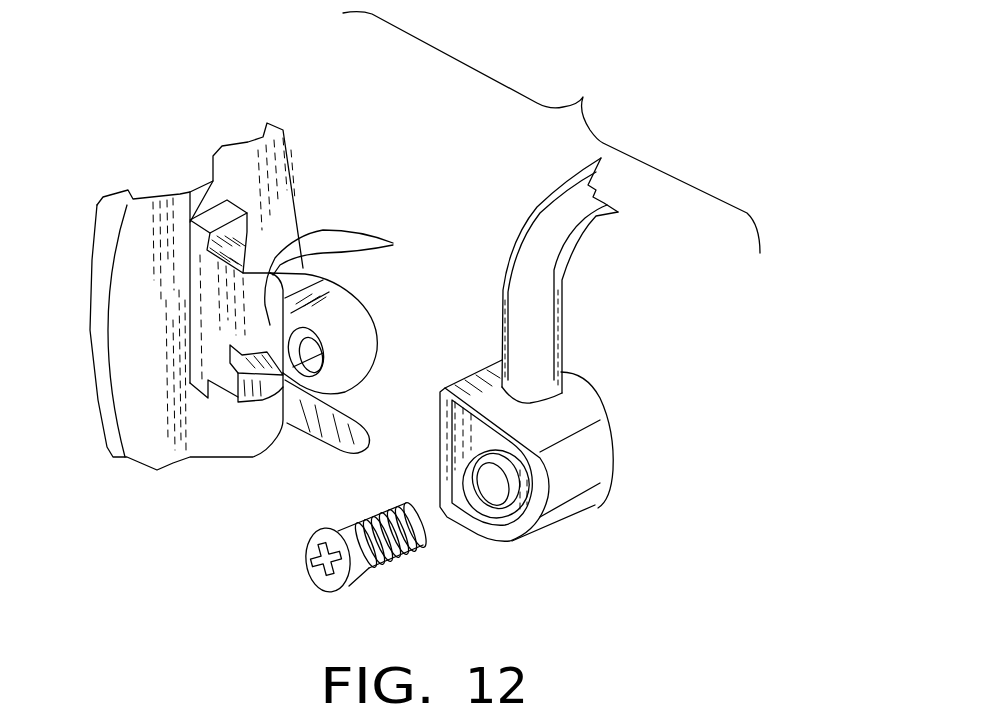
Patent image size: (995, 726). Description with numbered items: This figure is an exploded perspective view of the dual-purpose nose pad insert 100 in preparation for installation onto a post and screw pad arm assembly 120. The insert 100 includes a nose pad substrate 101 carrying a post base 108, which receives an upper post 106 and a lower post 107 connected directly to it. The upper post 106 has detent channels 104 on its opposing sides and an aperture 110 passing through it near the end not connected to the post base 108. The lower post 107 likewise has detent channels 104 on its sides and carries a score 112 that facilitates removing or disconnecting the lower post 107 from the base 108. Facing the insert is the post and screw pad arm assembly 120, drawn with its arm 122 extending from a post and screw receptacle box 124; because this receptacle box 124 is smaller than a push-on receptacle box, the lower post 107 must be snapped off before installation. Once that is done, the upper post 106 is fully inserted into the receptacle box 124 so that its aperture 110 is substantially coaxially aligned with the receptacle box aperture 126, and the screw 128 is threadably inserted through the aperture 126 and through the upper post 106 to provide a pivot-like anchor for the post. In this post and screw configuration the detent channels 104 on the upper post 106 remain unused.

The dual-purpose nose pad insert 100 is at (137, 171).
The nose pad substrate 101 is at (282, 172).
The detent channels 104 is at (354, 277).
The upper post 106 is at (343, 300).
The lower post 107 is at (347, 423).
The post base 108 is at (237, 223).
The aperture 110 is at (322, 372).
The score 112 is at (238, 373).
The post and screw pad arm assembly 120 is at (577, 353).
The curved arm 122 is at (527, 253).
The post and screw receptacle box 124 is at (592, 465).
The receptacle box aperture 126 is at (490, 503).
The screw 128 is at (413, 547).